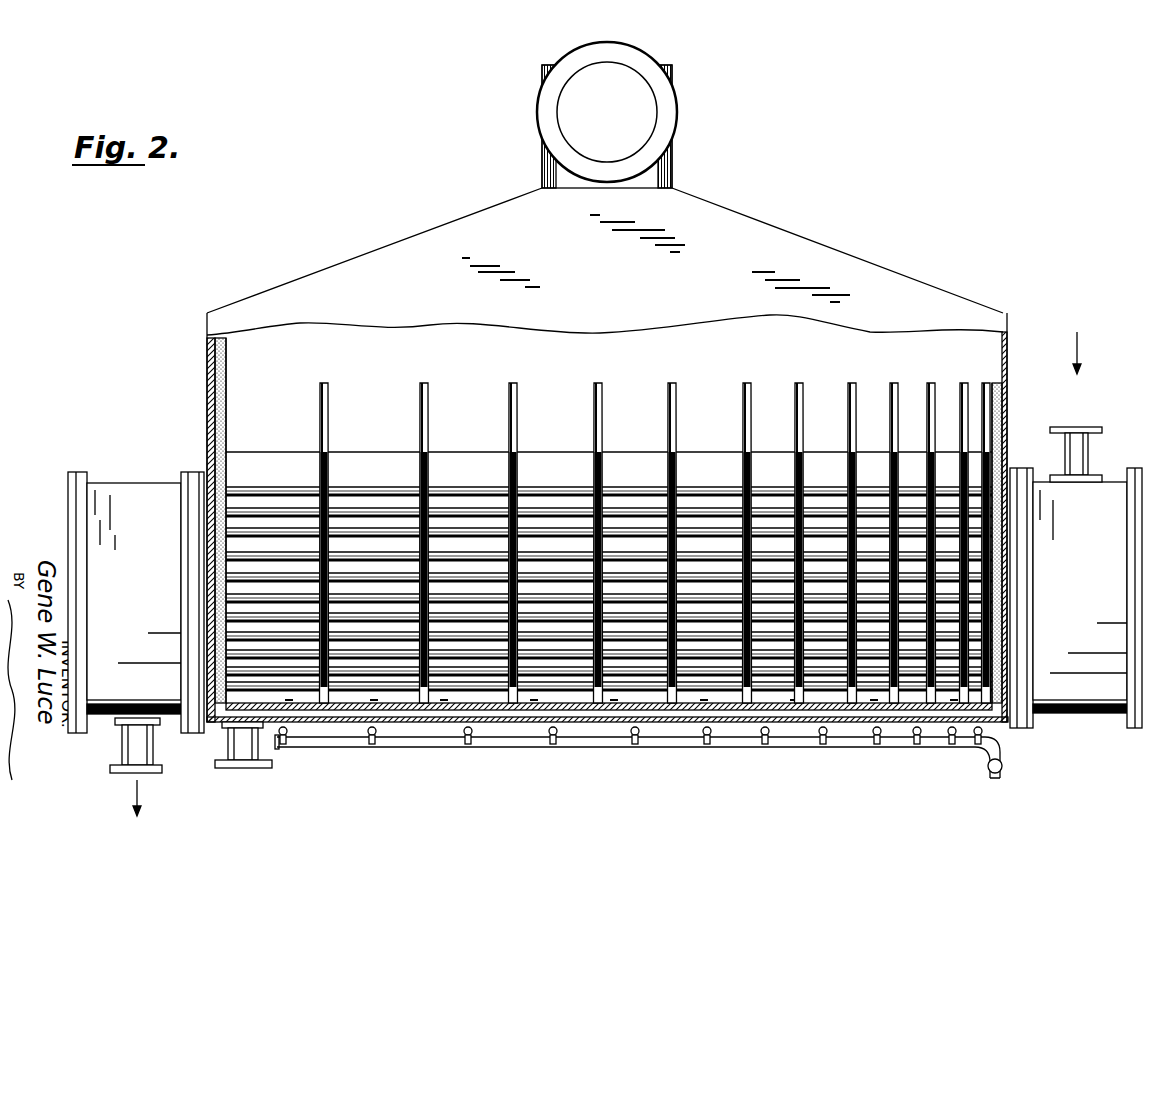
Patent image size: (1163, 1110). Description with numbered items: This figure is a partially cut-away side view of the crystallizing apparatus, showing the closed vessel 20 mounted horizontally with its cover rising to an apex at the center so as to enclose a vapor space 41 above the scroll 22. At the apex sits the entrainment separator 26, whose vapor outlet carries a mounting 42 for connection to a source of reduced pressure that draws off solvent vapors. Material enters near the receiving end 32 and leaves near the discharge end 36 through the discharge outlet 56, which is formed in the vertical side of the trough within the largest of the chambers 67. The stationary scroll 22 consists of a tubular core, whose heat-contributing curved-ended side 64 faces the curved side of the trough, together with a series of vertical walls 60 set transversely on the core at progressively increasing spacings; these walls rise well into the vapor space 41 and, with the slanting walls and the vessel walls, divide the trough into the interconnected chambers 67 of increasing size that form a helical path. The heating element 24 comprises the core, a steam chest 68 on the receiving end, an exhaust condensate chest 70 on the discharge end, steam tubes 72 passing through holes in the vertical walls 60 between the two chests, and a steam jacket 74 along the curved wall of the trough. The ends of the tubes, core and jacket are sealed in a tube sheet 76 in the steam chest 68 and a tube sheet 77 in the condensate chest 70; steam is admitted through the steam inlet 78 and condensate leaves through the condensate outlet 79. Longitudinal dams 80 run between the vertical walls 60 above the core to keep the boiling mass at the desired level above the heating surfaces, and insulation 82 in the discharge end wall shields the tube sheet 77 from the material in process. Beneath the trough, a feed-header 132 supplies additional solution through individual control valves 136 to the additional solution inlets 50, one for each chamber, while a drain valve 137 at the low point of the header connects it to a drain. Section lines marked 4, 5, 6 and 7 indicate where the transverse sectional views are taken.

The closed vessel 20 is at (782, 250).
The scroll 22 is at (600, 412).
The heating element 24 is at (110, 500).
The entrainment separator 26 is at (562, 169).
The receiving end 32 is at (1008, 345).
The discharge end 36 is at (207, 390).
The vapor space 41 is at (375, 362).
The mounting 42 is at (618, 85).
The additional solution inlets 50 is at (445, 697).
The discharge outlet 56 is at (222, 762).
The vertical walls 60 is at (513, 440).
The curved-ended side 64 is at (770, 500).
The chambers 67 is at (878, 440).
The steam chest 68 is at (1087, 665).
The exhaust condensate chest 70 is at (137, 532).
The steam tubes 72 is at (275, 537).
The steam jacket 74 is at (758, 748).
The tube sheet 76 is at (1020, 468).
The tube sheet 77 is at (193, 478).
The steam inlet 78 is at (1080, 465).
The condensate outlet 79 is at (130, 778).
The longitudinal dams 80 is at (710, 462).
The insulation 82 is at (214, 355).
The feed-header 132 is at (688, 738).
The control valves 136 is at (552, 736).
The drain valve 137 is at (986, 767).
The section line 4 is at (1077, 450).
The section line 5 is at (1015, 460).
The section line 6 is at (1002, 310).
The section line 7 is at (280, 247).